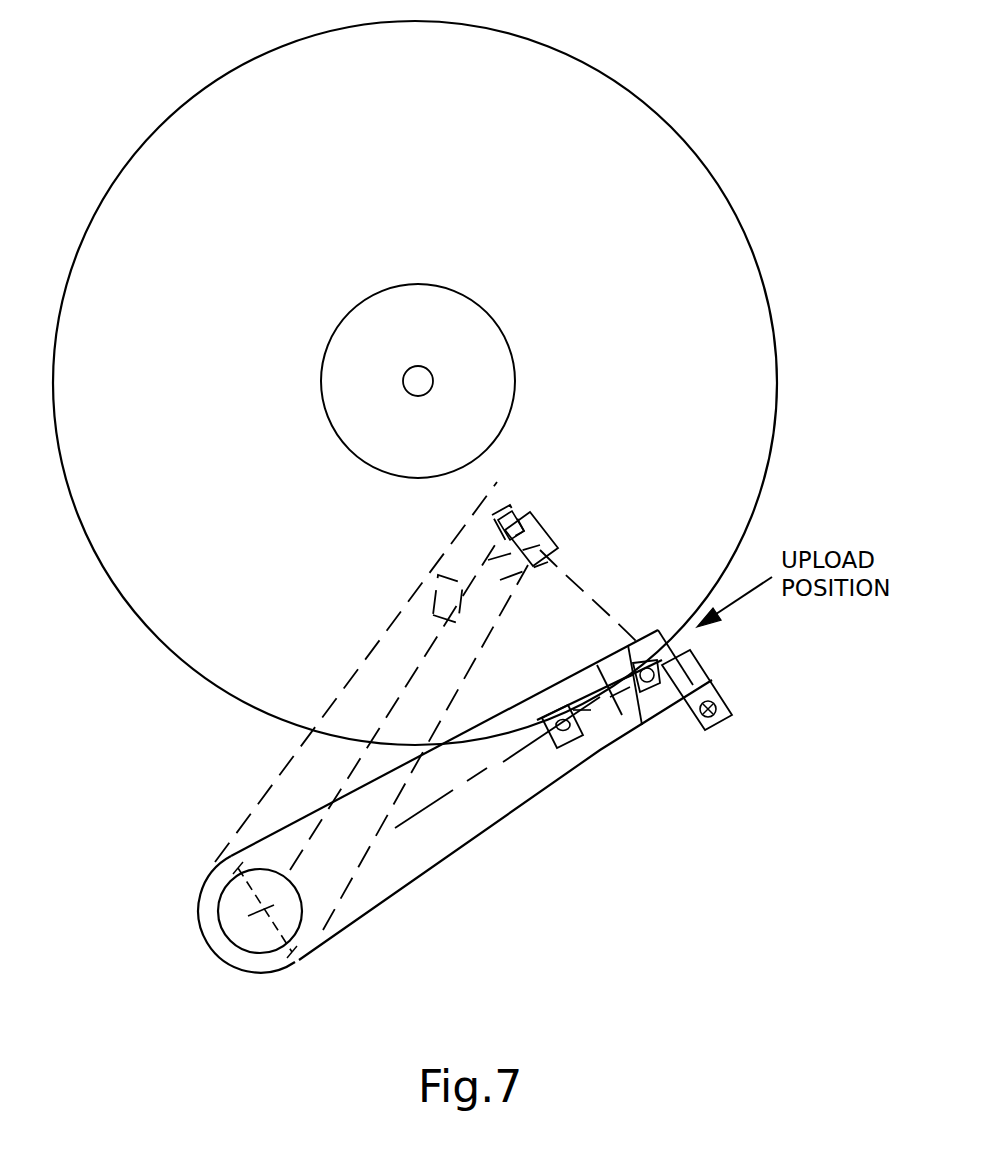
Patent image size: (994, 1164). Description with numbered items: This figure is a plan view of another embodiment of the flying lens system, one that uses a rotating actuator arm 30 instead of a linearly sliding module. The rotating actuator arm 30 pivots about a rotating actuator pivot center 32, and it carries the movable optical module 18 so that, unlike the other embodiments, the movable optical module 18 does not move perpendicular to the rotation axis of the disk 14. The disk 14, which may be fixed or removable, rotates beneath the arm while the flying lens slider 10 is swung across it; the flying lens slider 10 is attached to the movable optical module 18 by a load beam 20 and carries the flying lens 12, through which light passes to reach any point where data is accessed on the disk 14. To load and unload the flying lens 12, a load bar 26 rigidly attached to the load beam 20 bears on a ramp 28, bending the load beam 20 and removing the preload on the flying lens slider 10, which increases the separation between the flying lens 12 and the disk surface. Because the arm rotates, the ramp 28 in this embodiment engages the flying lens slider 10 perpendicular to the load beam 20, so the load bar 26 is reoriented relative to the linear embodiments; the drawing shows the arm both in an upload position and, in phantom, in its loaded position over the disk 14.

The flying lens slider 10 is at (553, 528).
The flying lens 12 is at (525, 517).
The disk 14 is at (682, 135).
The movable optical module 18 is at (498, 505).
The load beam 20 is at (613, 743).
The load bar 26 is at (677, 670).
The ramp 28 is at (722, 690).
The rotating actuator arm 30 is at (440, 866).
The rotating actuator pivot center 32 is at (262, 953).